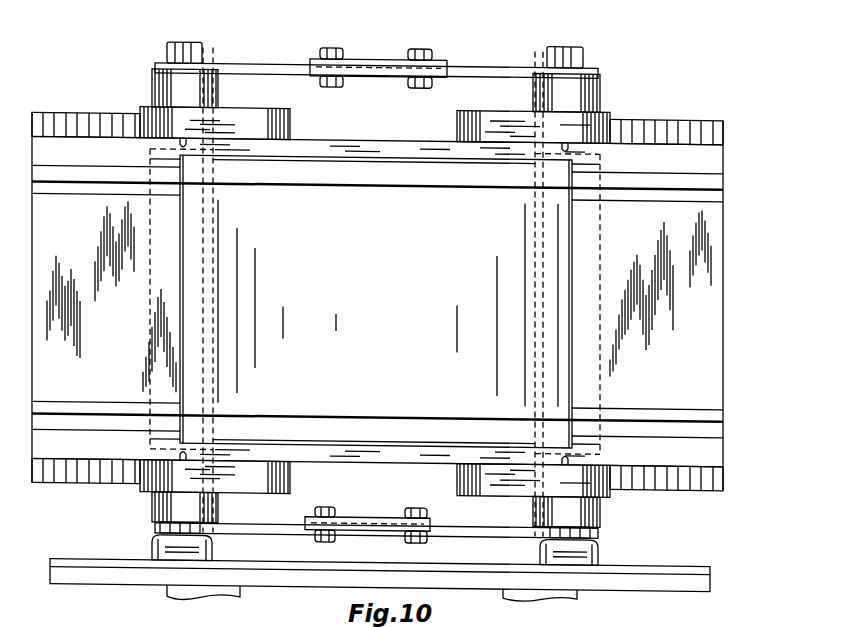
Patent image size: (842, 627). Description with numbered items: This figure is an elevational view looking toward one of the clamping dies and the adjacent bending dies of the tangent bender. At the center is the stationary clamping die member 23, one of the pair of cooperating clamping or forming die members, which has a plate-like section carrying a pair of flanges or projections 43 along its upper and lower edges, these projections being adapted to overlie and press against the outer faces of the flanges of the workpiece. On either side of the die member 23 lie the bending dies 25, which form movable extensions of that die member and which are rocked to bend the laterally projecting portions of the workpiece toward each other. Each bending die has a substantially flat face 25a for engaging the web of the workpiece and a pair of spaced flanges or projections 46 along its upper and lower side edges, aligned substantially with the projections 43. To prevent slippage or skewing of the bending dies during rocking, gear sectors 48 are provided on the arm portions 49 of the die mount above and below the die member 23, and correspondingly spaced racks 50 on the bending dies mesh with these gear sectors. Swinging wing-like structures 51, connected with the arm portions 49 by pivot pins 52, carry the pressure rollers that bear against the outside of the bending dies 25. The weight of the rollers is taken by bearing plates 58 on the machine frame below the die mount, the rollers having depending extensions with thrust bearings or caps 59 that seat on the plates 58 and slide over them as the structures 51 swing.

The stationary clamping die member 23 is at (312, 198).
The bending die 25 is at (40, 331).
The flat face 25a is at (711, 286).
The flanges or projections 43 is at (392, 184).
The flanges or projections 46 is at (34, 184).
The gear sectors 48 is at (149, 116).
The arm portions 49 is at (240, 113).
The racks 50 is at (62, 114).
The swinging wing-like structures 51 is at (218, 73).
The pivot pins 52 is at (192, 44).
The bearing plates 58 is at (643, 571).
The thrust bearings or caps 59 is at (596, 557).